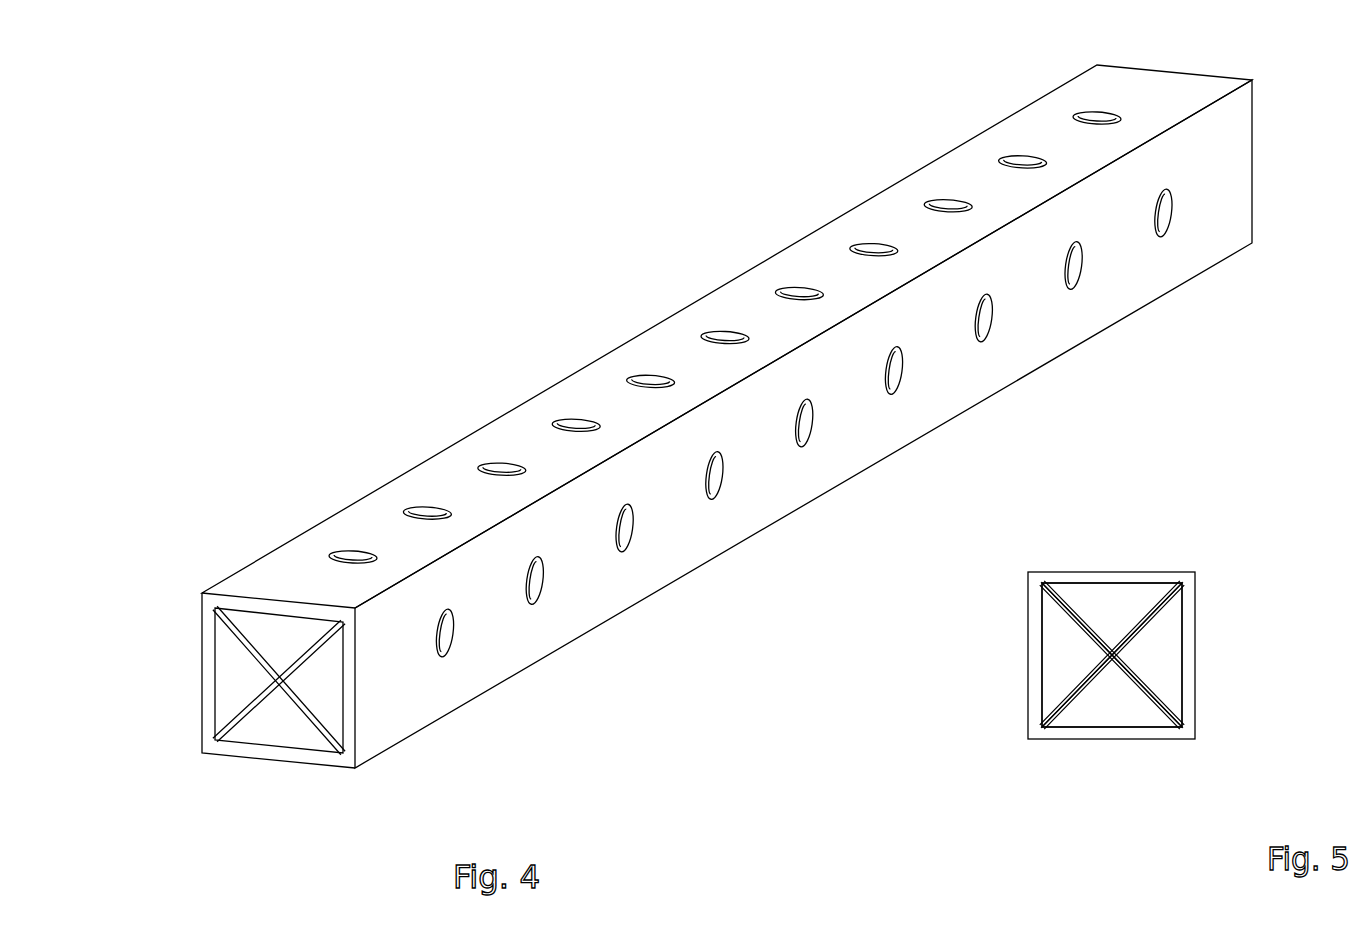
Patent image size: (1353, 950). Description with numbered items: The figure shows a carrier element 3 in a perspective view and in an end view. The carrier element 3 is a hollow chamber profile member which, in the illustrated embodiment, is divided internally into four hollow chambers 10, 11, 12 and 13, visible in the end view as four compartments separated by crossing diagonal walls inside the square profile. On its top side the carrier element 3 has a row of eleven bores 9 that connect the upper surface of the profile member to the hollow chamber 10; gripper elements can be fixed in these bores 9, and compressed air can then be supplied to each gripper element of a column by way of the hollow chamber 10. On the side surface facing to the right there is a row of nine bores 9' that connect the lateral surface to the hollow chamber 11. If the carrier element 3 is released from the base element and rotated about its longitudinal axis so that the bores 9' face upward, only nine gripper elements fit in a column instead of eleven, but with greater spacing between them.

In FIG. 4, the carrier element 3 is at (505, 640).
In FIG. 4, the bores 9 is at (689, 337).
In FIG. 4, the bores 9' is at (804, 438).
In FIG. 4, the hollow chamber 10 is at (265, 625).
In FIG. 5, the hollow chamber 10 is at (1110, 612).
In FIG. 4, the hollow chamber 11 is at (325, 695).
In FIG. 5, the hollow chamber 11 is at (1158, 654).
In FIG. 5, the hollow chamber 12 is at (1103, 703).
In FIG. 5, the hollow chamber 13 is at (1065, 648).